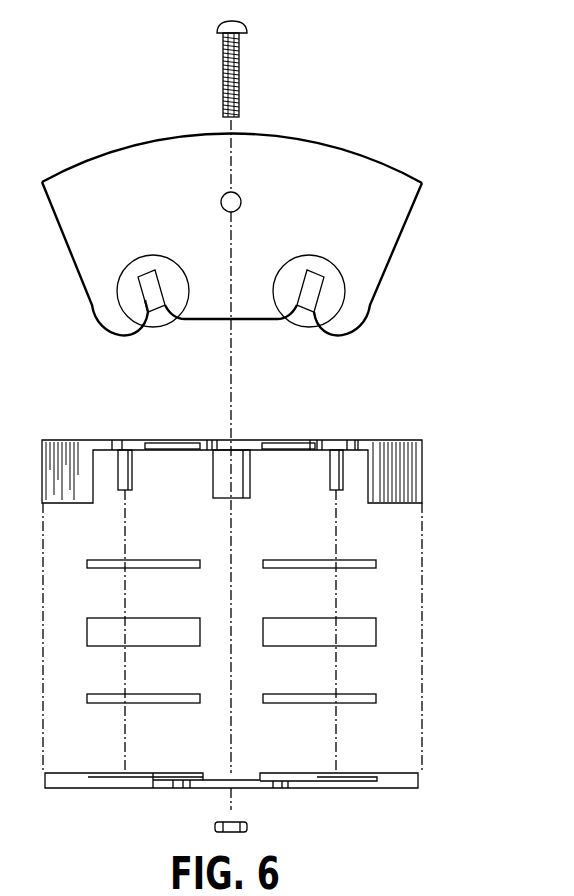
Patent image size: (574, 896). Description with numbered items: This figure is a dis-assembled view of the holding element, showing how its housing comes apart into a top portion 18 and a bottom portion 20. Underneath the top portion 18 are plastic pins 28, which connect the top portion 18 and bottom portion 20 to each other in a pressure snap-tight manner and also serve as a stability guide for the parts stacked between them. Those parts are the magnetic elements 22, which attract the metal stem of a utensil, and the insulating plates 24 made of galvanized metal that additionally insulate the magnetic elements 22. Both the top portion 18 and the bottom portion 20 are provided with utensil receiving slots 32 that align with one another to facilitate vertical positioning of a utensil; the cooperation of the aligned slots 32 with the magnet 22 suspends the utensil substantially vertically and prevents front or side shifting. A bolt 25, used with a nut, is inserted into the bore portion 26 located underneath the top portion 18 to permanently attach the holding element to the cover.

The bolt 25 is at (243, 65).
The top portion 18 is at (363, 202).
The utensil receiving slots 32 is at (143, 304).
The bore portion 26 is at (246, 482).
The plastic pins 28 is at (127, 470).
The insulating plates 24 is at (376, 565).
The magnetic elements 22 is at (376, 633).
The bottom portion 20 is at (418, 782).